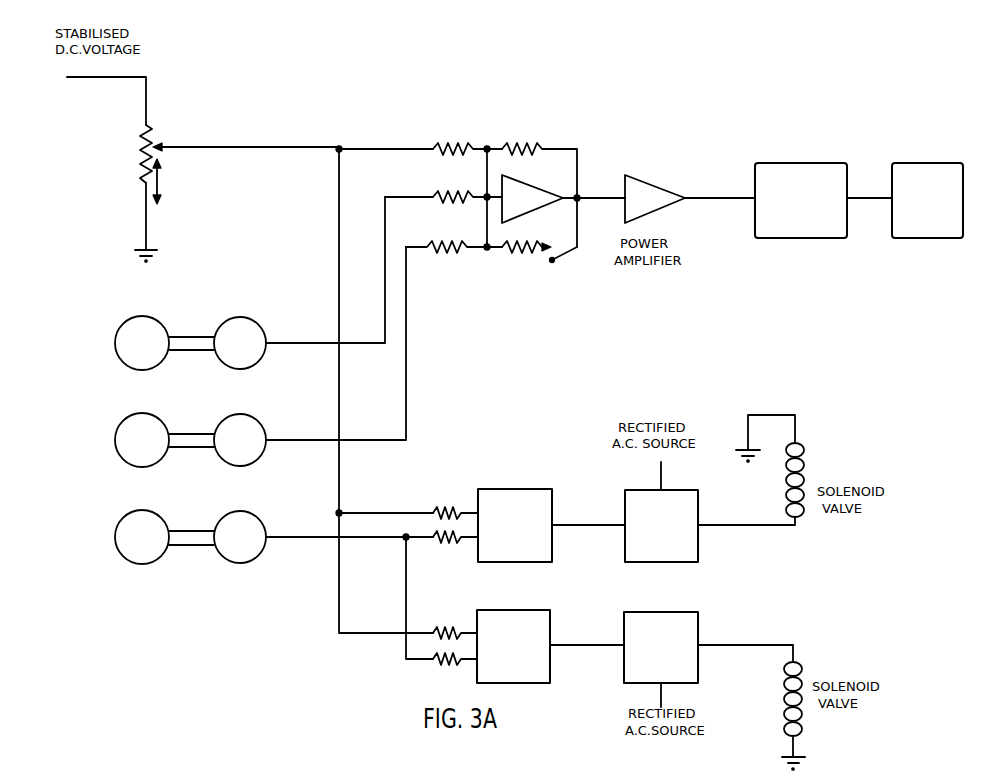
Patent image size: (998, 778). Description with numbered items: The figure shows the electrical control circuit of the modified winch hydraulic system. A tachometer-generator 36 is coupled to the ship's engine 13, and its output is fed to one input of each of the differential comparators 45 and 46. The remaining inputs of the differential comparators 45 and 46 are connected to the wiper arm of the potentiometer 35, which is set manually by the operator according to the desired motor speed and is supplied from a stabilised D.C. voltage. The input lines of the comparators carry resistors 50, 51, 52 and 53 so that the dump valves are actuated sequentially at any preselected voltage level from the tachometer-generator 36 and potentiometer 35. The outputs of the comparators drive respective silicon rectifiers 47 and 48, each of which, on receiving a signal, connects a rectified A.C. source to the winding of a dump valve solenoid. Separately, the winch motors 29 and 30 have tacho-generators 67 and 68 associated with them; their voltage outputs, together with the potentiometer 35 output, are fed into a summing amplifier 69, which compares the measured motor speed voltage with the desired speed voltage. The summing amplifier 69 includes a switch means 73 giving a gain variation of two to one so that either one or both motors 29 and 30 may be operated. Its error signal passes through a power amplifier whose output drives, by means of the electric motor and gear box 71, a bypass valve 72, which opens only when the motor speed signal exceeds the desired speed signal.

The potentiometer 35 is at (186, 118).
The switch means 73 is at (545, 260).
The summing amplifier 69 is at (558, 203).
The electric motor and gear box 71 is at (827, 164).
The bypass valve 72 is at (946, 164).
The winch motor 29 is at (163, 325).
The tacho-generator 67 is at (257, 324).
The winch motor 30 is at (163, 423).
The tacho-generator 68 is at (263, 427).
The ship's engine 13 is at (165, 523).
The tachometer-generator 36 is at (257, 521).
The resistor 50 is at (439, 509).
The resistor 51 is at (437, 544).
The resistor 52 is at (439, 631).
The resistor 53 is at (437, 665).
The differential comparator 45 is at (530, 474).
The differential comparator 46 is at (524, 610).
The silicon rectifier 47 is at (698, 517).
The silicon rectifier 48 is at (698, 632).